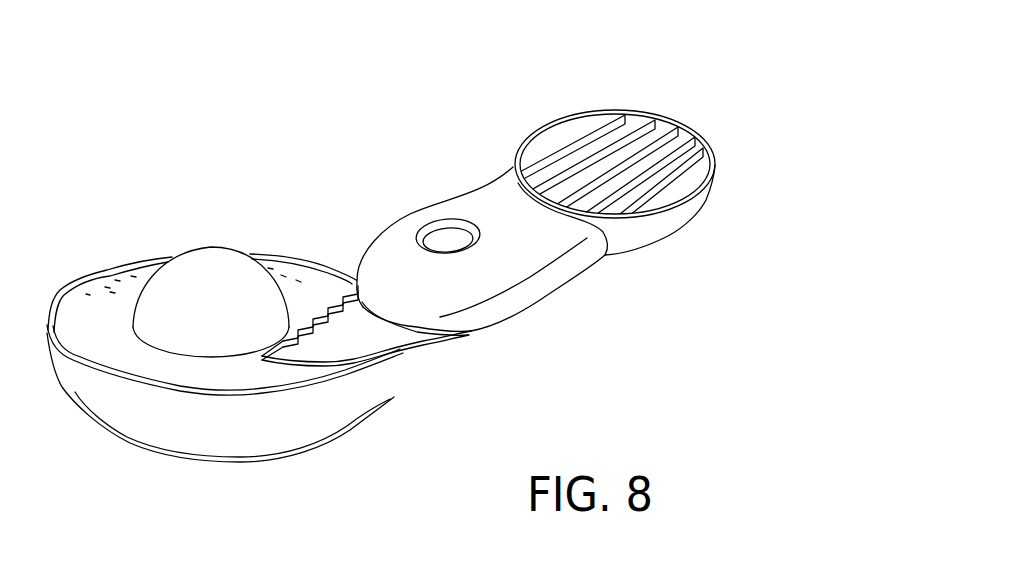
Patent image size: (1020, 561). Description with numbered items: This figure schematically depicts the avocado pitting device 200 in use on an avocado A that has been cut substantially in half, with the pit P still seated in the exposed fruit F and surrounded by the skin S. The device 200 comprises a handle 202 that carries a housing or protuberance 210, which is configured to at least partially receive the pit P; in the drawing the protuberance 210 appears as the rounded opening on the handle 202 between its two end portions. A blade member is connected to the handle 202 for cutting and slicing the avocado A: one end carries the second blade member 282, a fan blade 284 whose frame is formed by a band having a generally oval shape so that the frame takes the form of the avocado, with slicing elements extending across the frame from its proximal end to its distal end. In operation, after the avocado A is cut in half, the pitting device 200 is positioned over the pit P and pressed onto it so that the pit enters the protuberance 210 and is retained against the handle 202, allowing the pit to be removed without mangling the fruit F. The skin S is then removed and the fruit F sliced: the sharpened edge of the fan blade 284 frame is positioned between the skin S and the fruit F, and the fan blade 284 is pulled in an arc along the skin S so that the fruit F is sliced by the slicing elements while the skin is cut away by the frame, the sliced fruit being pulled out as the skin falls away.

The avocado pitting device 200 is at (508, 239).
The handle 202 is at (529, 265).
The protuberance 210 is at (395, 246).
The second blade member 282 is at (398, 372).
The fan blade 284 is at (712, 121).
The avocado A is at (215, 345).
The fruit F is at (93, 311).
The pit P is at (208, 283).
The skin S is at (83, 367).